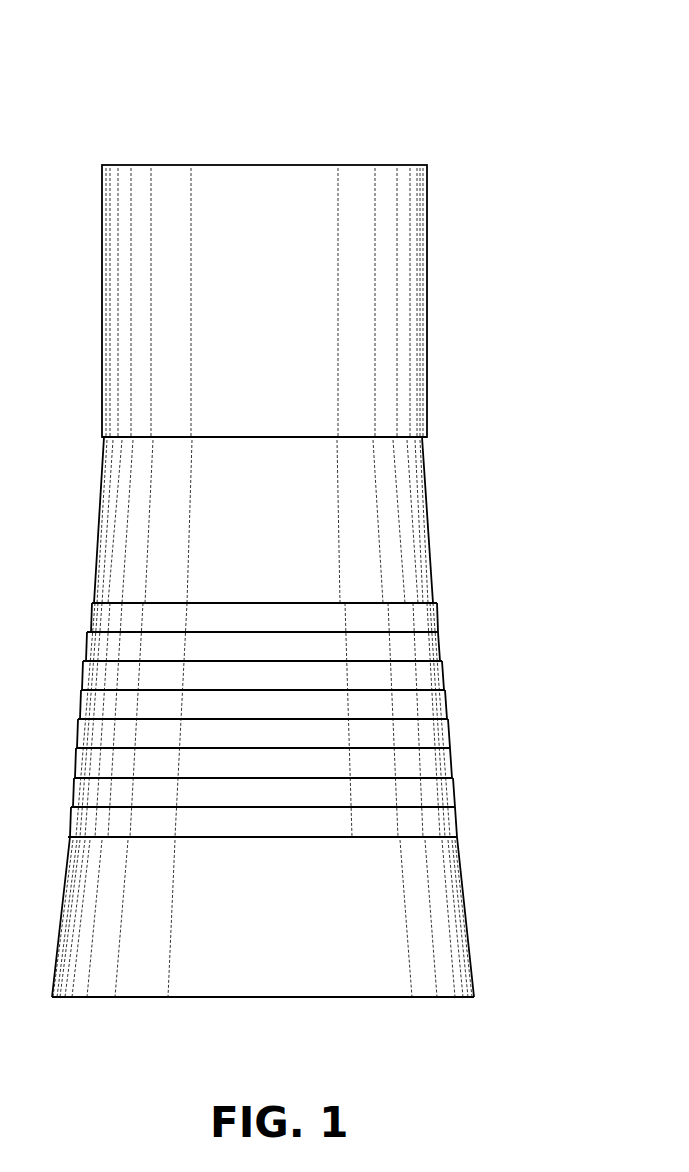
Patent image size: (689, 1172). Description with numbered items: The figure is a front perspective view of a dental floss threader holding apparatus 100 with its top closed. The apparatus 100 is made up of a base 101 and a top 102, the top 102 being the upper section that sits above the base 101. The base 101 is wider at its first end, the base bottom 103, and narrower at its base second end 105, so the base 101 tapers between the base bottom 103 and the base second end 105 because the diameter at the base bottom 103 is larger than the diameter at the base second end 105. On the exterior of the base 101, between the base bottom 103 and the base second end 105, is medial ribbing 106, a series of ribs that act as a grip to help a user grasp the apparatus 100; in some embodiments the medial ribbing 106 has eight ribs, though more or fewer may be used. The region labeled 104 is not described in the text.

The apparatus 100 is at (417, 104).
The base 101 is at (408, 530).
The top 102 is at (415, 213).
The base bottom 103 is at (476, 998).
The lower tapered section 104 is at (449, 853).
The base second end 105 is at (422, 440).
The medial ribbing 106 is at (430, 677).